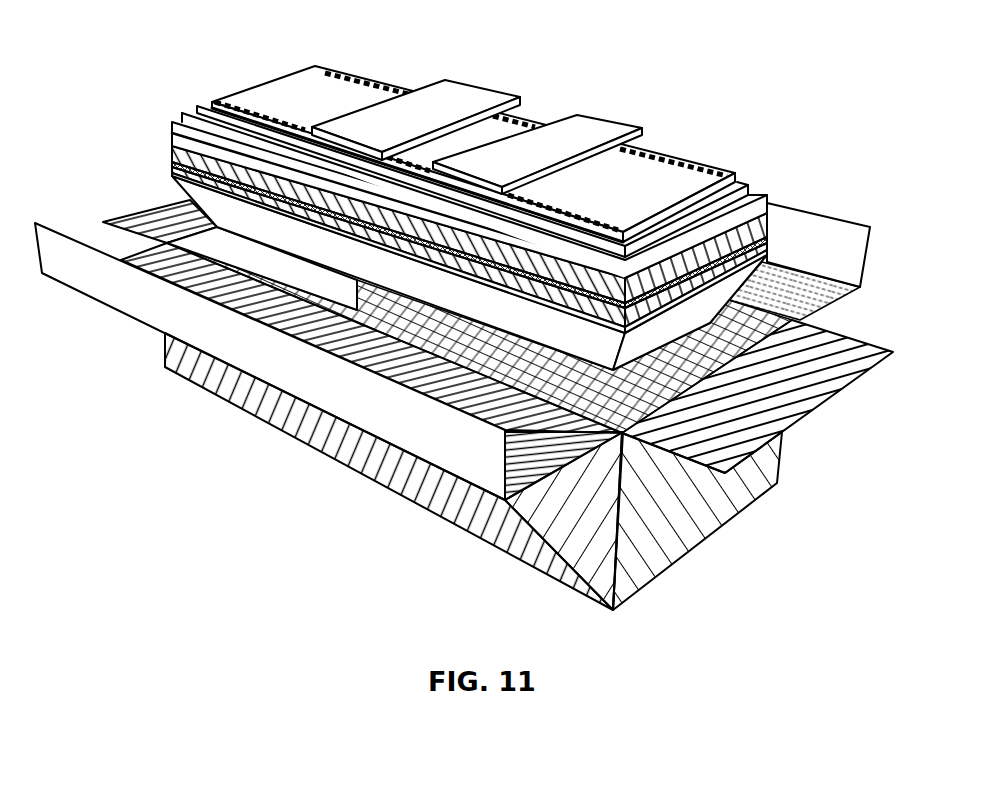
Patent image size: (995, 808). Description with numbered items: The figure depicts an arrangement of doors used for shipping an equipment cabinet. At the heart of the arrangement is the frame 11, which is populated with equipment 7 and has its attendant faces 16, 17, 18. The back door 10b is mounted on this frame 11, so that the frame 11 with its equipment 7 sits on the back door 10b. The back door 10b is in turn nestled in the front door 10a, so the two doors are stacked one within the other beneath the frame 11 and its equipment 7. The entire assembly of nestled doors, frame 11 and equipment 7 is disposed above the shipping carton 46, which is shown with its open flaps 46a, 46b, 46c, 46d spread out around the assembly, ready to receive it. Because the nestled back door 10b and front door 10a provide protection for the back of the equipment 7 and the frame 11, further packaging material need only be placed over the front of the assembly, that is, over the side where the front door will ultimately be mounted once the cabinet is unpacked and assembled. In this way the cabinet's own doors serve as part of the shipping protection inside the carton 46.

The frame 11 is at (536, 199).
The equipment 7 is at (600, 124).
The face 18 is at (650, 145).
The face 17 is at (750, 183).
The face 16 is at (760, 197).
The back door 10b is at (767, 227).
The front door 10a is at (765, 258).
The shipping carton 46 is at (476, 409).
The flap 46a is at (127, 302).
The flap 46b is at (840, 350).
The flap 46c is at (823, 233).
The flap 46d is at (138, 214).